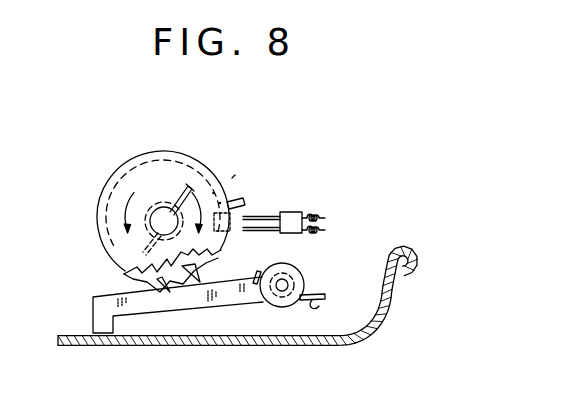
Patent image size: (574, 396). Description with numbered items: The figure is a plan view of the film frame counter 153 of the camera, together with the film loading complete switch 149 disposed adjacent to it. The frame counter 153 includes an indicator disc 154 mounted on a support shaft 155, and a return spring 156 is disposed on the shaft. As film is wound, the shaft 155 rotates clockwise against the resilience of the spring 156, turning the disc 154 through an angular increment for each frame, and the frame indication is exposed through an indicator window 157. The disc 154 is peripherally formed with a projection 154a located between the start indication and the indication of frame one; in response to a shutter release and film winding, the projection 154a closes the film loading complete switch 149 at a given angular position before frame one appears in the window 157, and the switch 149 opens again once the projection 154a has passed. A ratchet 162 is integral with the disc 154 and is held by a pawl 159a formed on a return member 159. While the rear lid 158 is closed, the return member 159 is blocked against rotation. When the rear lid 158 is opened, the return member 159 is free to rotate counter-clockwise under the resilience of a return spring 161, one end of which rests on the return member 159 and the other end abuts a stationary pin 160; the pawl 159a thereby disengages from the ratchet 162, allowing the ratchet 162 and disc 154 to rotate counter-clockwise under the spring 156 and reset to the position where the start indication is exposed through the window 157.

The film loading complete switch 149 is at (295, 214).
The film frame counter 153 is at (235, 180).
The indicator disc 154 is at (129, 164).
The projection 154a is at (240, 200).
The support shaft 155 is at (158, 214).
The return spring 156 is at (190, 184).
The indicator window 157 is at (232, 229).
The rear lid 158 is at (204, 345).
The return member 159 is at (246, 299).
The pawl 159a is at (190, 279).
The stationary pin 160 is at (318, 302).
The return spring 161 is at (302, 294).
The ratchet 162 is at (157, 289).